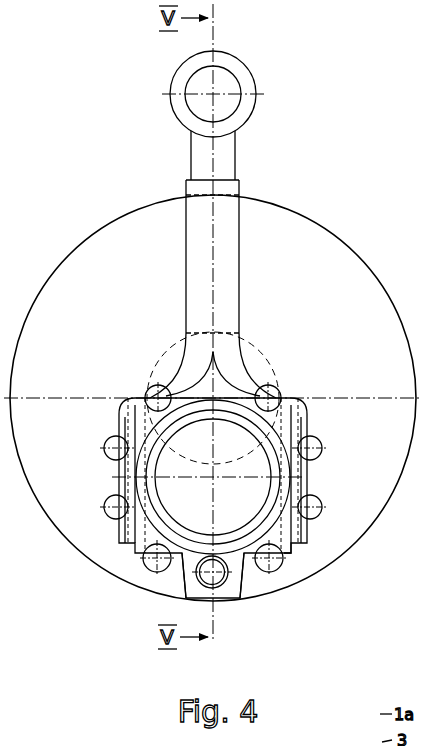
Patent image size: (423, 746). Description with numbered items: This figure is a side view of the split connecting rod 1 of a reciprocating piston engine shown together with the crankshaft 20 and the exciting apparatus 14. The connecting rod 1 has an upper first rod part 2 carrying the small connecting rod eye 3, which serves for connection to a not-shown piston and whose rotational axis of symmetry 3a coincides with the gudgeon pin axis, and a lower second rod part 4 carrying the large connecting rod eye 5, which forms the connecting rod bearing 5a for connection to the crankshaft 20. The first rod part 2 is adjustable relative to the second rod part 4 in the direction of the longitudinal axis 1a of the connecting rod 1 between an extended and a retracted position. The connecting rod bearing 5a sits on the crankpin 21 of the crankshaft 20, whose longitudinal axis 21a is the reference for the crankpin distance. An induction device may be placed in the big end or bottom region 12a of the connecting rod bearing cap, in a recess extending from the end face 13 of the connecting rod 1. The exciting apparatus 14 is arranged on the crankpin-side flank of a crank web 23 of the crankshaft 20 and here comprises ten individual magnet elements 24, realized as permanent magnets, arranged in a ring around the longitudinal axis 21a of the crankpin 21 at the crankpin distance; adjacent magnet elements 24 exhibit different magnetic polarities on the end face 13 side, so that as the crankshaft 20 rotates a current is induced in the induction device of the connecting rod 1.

The connecting rod 1 is at (243, 185).
The longitudinal axis 1a is at (214, 33).
The first rod part 2 is at (228, 147).
The small connecting rod eye 3 is at (228, 85).
The rotational axis of symmetry 3a is at (187, 92).
The second rod part 4 is at (239, 287).
The large connecting rod eye 5 is at (193, 537).
The connecting rod bearing 5a is at (158, 456).
The bottom region of the connecting rod bearing cap 12a is at (229, 598).
The end face 13 is at (240, 588).
The exciting apparatus 14 is at (291, 563).
The crankshaft 20 is at (268, 352).
The crankpin 21 is at (253, 505).
The longitudinal axis of the crankpin 21a is at (208, 482).
The crank web 23 is at (358, 522).
The magnet element 24 is at (320, 443).